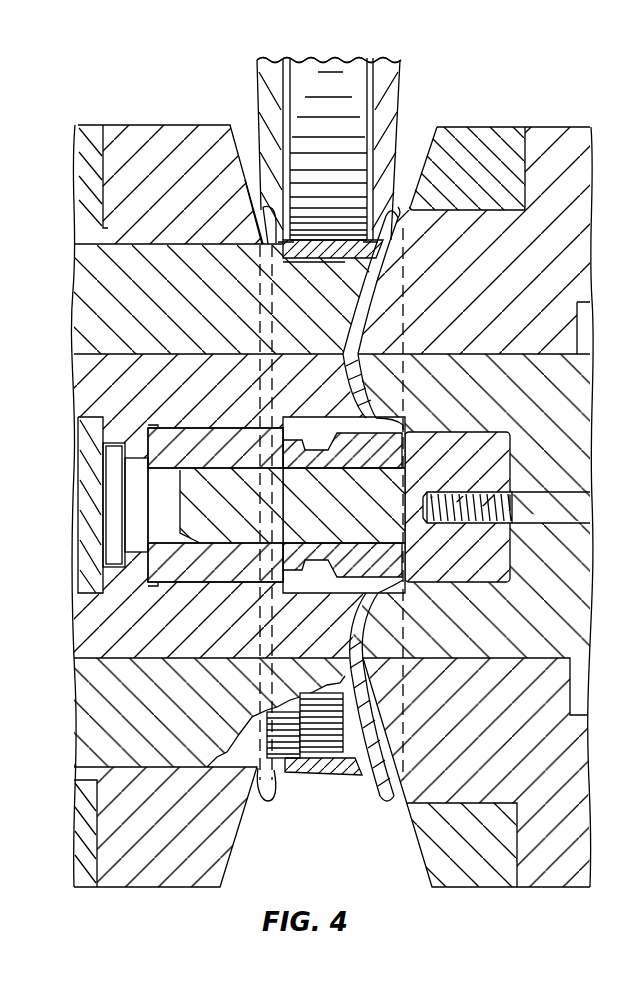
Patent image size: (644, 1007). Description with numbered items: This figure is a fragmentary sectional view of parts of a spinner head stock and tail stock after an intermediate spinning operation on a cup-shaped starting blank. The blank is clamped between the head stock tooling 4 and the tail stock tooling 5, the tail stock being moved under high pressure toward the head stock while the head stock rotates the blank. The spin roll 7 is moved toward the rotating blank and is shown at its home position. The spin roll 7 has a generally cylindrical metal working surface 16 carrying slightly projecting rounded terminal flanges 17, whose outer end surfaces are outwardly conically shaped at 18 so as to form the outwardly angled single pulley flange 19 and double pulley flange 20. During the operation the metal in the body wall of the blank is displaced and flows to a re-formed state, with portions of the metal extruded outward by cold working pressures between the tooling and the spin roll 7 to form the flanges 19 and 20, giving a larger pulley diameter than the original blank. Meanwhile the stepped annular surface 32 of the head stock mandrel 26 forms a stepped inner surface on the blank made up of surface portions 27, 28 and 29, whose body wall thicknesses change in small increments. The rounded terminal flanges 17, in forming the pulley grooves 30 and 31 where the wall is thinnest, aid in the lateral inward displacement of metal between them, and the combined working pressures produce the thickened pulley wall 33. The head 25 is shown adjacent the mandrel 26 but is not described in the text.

The head stock tooling 4 is at (100, 740).
The tail stock tooling 5 is at (540, 732).
The spin roll 7 is at (403, 62).
The cylindrical metal working surface 16 is at (327, 198).
The terminal flanges 17 is at (368, 100).
The outwardly conically shaped end surfaces 18 is at (260, 178).
The single pulley flange 19 is at (268, 222).
The double pulley flange 20 is at (390, 212).
The head 25 is at (405, 593).
The head stock mandrel 26 is at (125, 621).
The stepped surface portion 27 is at (345, 770).
The stepped surface portion 28 is at (317, 757).
The stepped surface portion 29 is at (290, 773).
The pulley groove 30 is at (362, 772).
The pulley groove 31 is at (273, 797).
The stepped annular surface 32 is at (320, 258).
The thickened pulley wall 33 is at (345, 250).